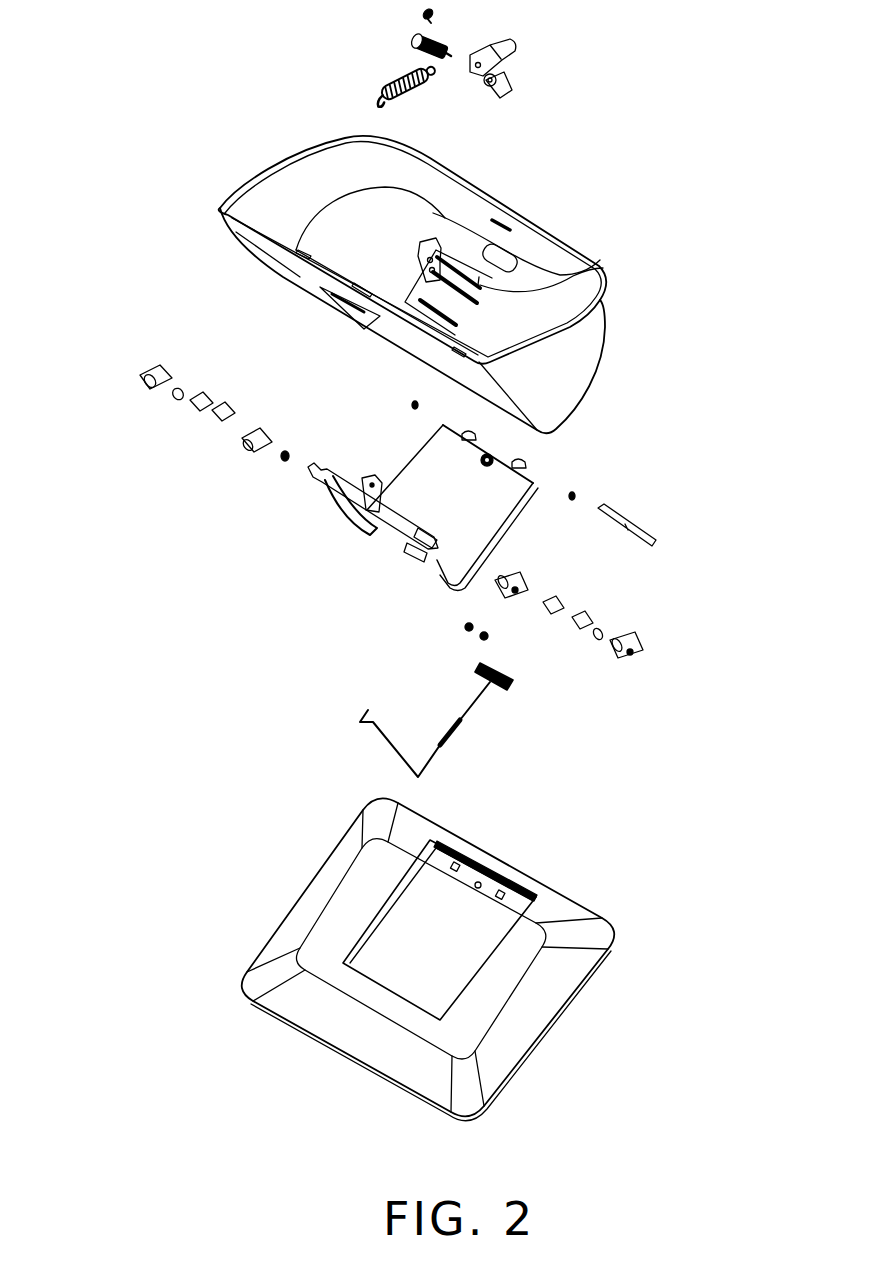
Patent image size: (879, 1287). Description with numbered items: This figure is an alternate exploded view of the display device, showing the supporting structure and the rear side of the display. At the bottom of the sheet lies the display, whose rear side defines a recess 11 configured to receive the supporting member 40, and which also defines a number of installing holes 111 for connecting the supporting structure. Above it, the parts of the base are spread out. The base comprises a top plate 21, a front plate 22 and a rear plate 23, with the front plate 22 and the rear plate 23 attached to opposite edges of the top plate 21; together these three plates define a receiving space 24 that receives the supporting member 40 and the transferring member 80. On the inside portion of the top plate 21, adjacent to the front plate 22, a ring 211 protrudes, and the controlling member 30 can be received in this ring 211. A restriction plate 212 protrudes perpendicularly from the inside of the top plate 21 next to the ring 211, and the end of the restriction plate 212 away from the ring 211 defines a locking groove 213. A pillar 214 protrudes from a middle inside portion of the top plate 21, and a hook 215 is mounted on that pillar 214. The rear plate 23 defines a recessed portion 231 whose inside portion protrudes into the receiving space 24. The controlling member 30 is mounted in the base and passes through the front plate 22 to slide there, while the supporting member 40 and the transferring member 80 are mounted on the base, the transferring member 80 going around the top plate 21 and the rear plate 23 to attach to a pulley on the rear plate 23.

The recess 11 is at (397, 940).
The installing holes 111 is at (484, 887).
The top plate 21 is at (536, 322).
The ring 211 is at (505, 268).
The restriction plate 212 is at (482, 236).
The locking groove 213 is at (462, 228).
The pillar 214 is at (479, 279).
The hook 215 is at (430, 238).
The front plate 22 is at (521, 262).
The rear plate 23 is at (290, 270).
The recessed portion 231 is at (383, 327).
The receiving space 24 is at (353, 215).
The controlling member 30 is at (392, 52).
The supporting member 40 is at (340, 540).
The transferring member 80 is at (462, 716).